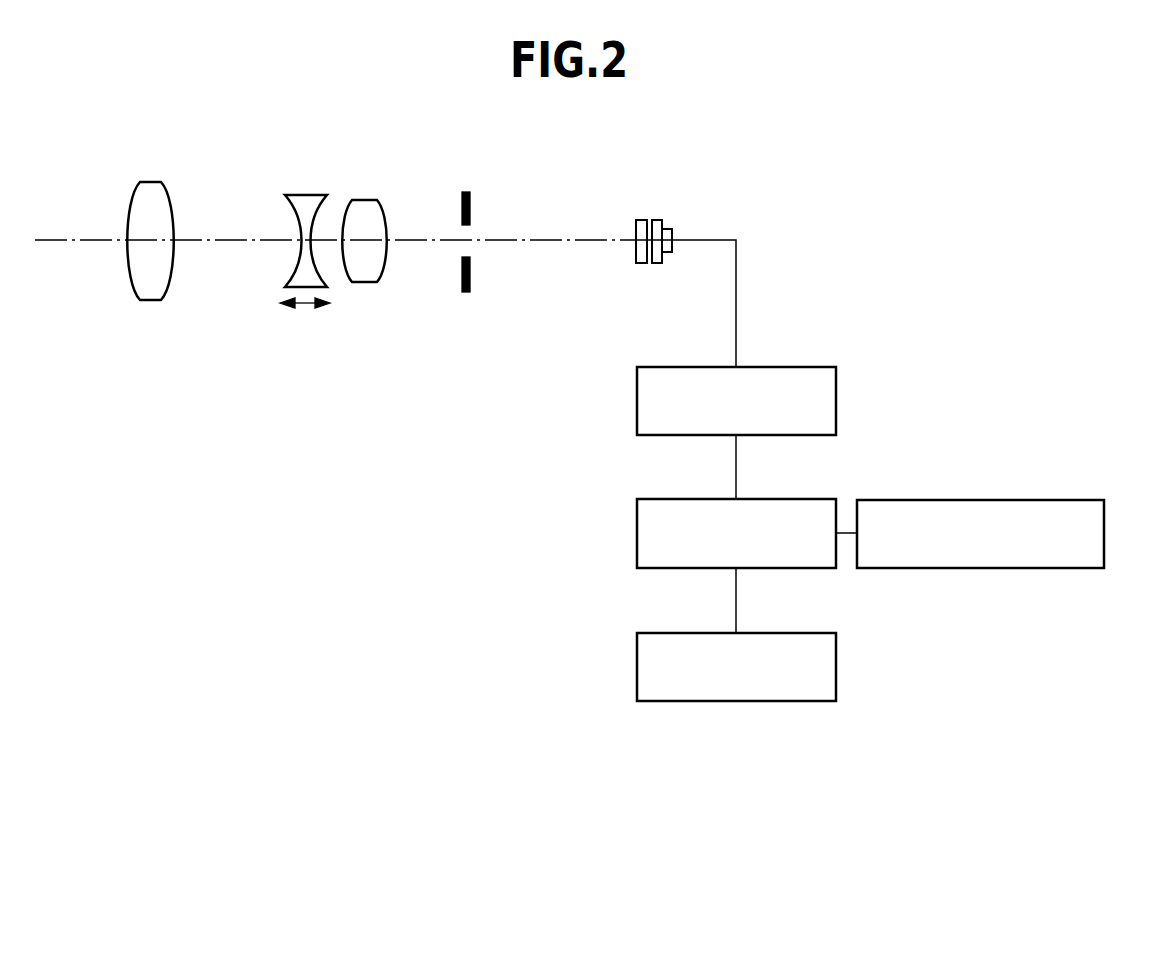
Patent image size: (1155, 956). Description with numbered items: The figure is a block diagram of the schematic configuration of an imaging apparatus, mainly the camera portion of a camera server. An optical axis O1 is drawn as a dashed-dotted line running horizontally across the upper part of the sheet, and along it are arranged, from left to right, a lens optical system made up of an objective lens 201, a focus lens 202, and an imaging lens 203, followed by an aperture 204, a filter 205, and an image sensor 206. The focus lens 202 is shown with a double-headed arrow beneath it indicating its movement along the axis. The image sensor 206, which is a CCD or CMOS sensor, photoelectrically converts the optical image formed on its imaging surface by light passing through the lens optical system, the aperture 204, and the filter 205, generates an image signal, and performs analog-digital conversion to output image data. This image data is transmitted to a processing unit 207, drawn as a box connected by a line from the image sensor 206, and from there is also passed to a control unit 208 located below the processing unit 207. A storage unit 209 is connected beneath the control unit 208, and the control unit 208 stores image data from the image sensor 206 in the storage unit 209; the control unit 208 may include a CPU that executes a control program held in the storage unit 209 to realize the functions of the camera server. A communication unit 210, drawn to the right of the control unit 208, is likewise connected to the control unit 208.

The optical axis O1 is at (78, 240).
The objective lens 201 is at (150, 182).
The focus lens 202 is at (305, 195).
The imaging lens 203 is at (363, 200).
The aperture 204 is at (470, 200).
The filter 205 is at (642, 220).
The image sensor 206 is at (668, 232).
The processing unit 207 is at (637, 400).
The control unit 208 is at (637, 535).
The storage unit 209 is at (637, 668).
The communication unit 210 is at (980, 500).